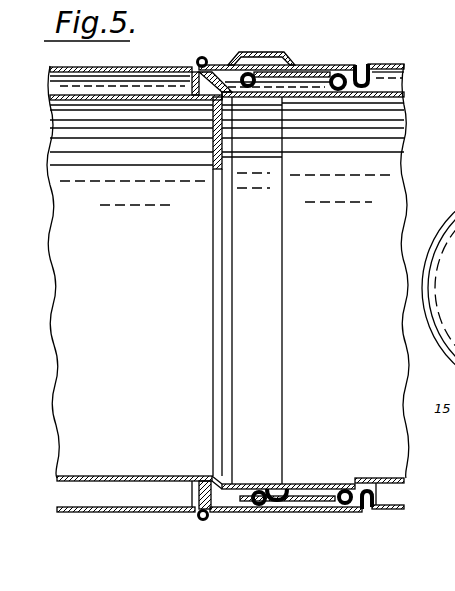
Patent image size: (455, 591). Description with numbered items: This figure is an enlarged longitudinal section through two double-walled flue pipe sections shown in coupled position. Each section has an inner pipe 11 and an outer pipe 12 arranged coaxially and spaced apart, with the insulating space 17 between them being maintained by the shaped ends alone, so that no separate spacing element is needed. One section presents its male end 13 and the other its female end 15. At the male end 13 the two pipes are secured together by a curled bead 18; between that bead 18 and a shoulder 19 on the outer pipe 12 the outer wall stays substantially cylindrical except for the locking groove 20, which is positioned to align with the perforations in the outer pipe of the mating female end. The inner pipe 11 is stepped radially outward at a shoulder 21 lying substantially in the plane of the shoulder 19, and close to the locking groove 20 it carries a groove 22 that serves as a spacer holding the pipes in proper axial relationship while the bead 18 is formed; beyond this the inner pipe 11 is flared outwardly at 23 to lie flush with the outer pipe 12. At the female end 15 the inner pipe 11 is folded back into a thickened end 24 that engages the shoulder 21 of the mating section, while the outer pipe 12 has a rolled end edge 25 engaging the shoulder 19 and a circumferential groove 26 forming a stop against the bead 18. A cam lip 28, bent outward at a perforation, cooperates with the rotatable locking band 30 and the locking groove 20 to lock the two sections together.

The inner pipe 11 is at (58, 479).
The outer pipe 12 is at (58, 509).
The male end 13 is at (233, 508).
The female end 15 is at (304, 510).
The insulating space 17 is at (70, 496).
The curled bead 18 is at (360, 484).
The shoulder 19 is at (195, 60).
The locking groove 20 is at (266, 505).
The shoulder 21 is at (215, 476).
The groove 22 is at (278, 492).
The flared portion 23 is at (323, 511).
The thickened end 24 is at (228, 484).
The rolled end edge 25 is at (203, 57).
The circumferential groove 26 is at (363, 513).
The cam lip 28 is at (252, 58).
The locking band 30 is at (300, 61).